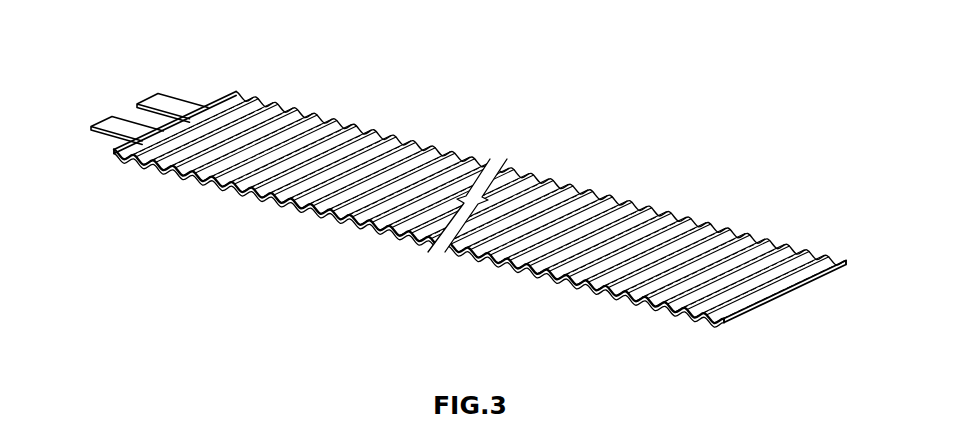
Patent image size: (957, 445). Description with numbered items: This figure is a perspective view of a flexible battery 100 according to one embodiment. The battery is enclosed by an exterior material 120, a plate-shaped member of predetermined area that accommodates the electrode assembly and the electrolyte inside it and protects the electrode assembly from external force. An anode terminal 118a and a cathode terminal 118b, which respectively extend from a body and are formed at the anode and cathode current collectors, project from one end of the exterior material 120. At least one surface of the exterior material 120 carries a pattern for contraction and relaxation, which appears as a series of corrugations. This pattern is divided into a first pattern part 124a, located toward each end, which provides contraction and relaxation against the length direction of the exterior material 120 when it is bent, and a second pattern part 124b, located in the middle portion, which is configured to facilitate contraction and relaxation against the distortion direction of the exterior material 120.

The flexible battery 100 is at (470, 190).
The anode terminal 118a is at (173, 102).
The cathode terminal 118b is at (113, 122).
The exterior material 120 is at (633, 298).
The first pattern part 124a is at (248, 91).
The second pattern part 124b is at (438, 142).